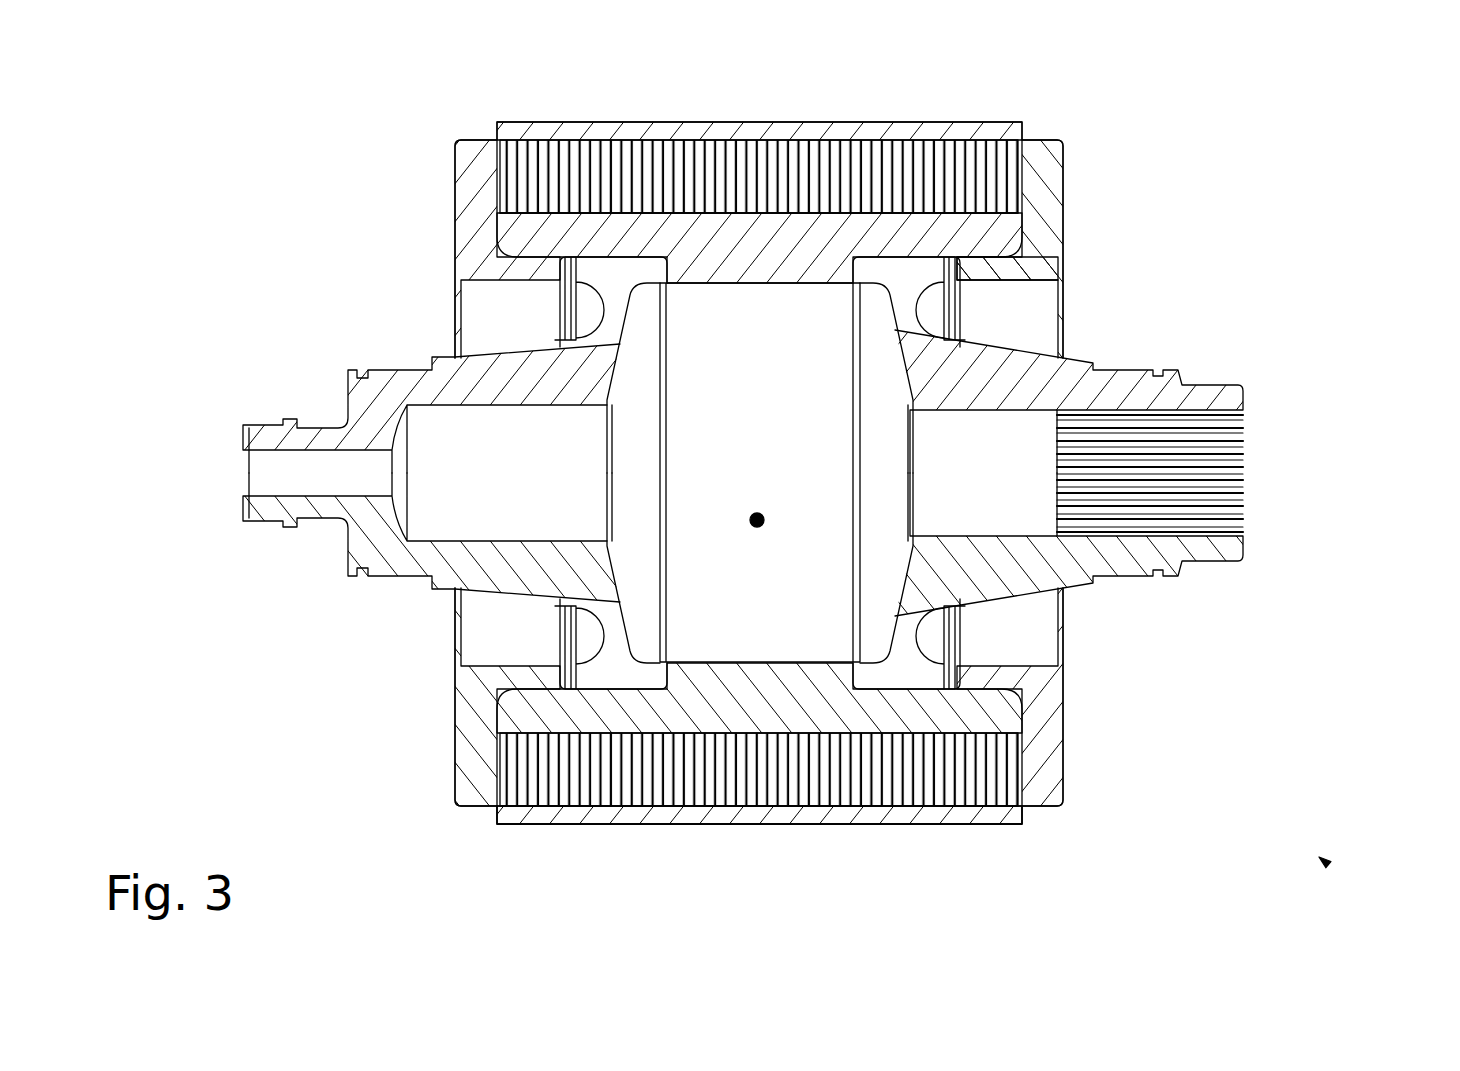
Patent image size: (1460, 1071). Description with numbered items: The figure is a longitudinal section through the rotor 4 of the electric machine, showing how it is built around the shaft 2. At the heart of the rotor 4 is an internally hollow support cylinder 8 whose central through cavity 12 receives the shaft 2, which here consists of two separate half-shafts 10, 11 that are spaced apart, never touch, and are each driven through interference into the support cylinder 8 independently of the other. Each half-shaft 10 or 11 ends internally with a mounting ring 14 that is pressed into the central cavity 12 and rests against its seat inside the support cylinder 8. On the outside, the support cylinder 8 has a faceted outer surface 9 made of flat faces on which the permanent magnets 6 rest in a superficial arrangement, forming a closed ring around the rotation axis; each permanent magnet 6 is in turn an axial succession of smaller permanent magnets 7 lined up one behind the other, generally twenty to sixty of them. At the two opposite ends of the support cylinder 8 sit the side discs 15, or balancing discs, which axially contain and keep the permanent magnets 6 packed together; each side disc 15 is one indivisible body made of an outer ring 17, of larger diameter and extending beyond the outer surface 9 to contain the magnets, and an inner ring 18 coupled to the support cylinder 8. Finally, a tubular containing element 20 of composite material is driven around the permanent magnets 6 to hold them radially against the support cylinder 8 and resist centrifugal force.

The shaft 2 is at (263, 315).
The rotor 4 is at (1327, 864).
The permanent magnet 6 is at (597, 98).
The permanent magnet 7 is at (810, 178).
The support cylinder 8 is at (771, 250).
The outer surface 9 is at (707, 203).
The half-shaft 10 is at (1170, 538).
The half-shaft 11 is at (325, 507).
The central through cavity 12 is at (757, 525).
The mounting ring 14 is at (615, 285).
The side disc 15 is at (420, 169).
The outer ring 17 is at (478, 763).
The inner ring 18 is at (983, 263).
The containing element 20 is at (588, 820).